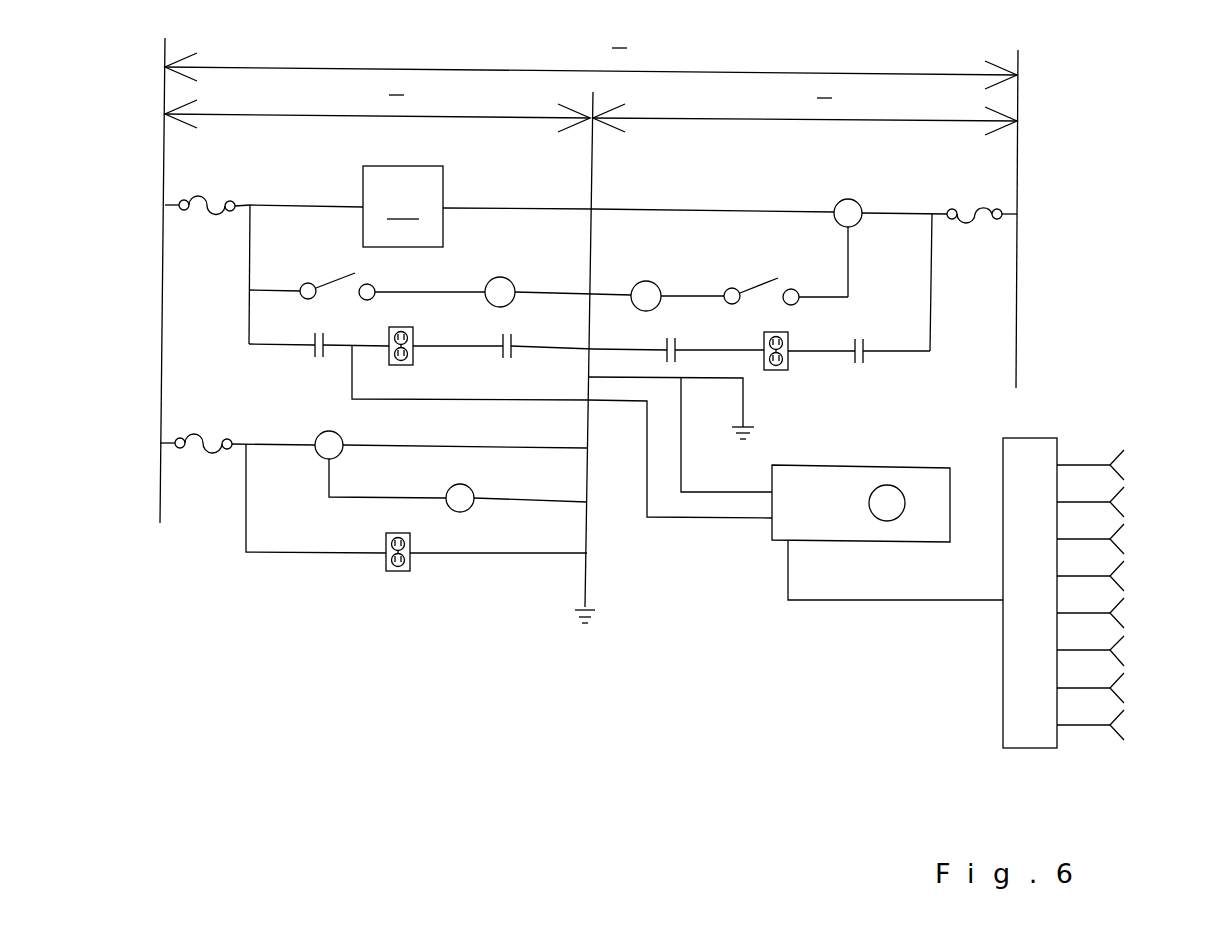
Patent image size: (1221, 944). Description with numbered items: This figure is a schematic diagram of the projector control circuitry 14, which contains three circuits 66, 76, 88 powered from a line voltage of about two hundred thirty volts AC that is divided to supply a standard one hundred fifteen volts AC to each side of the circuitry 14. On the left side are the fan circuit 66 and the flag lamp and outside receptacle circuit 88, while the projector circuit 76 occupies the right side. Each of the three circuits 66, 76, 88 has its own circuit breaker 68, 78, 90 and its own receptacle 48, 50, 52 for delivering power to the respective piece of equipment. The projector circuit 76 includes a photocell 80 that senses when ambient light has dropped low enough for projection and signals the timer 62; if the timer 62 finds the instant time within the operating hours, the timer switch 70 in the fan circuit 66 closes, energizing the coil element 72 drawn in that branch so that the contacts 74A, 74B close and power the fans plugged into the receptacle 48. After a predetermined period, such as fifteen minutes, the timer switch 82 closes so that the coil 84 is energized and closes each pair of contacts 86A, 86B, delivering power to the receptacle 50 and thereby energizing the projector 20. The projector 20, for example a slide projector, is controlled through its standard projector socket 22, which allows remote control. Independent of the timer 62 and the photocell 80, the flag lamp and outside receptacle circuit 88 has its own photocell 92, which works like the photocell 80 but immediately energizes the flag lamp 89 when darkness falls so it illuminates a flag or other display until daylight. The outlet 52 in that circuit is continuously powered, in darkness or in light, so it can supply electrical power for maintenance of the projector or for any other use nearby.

The control circuitry 14 is at (1087, 98).
The projector 20 is at (768, 530).
The projector socket 22 is at (1002, 633).
The receptacle 48 is at (402, 367).
The receptacle 50 is at (772, 370).
The outlet 52 is at (390, 570).
The timer 62 is at (403, 206).
The fan circuit 66 is at (198, 283).
The circuit breaker 68 is at (197, 194).
The timer switch 70 is at (336, 275).
The motor 72 is at (503, 276).
The contacts 74A is at (307, 348).
The contacts 74B is at (520, 353).
The projector circuit 76 is at (982, 292).
The circuit breaker 78 is at (992, 203).
The photocell 80 is at (843, 200).
The timer switch 82 is at (778, 278).
The coil 84 is at (647, 282).
The contacts 86A is at (677, 348).
The contacts 86B is at (863, 357).
The flag lamp and outside receptacle circuit 88 is at (202, 550).
The flag lamp 89 is at (470, 480).
The circuit breaker 90 is at (197, 437).
The photocell 92 is at (317, 455).